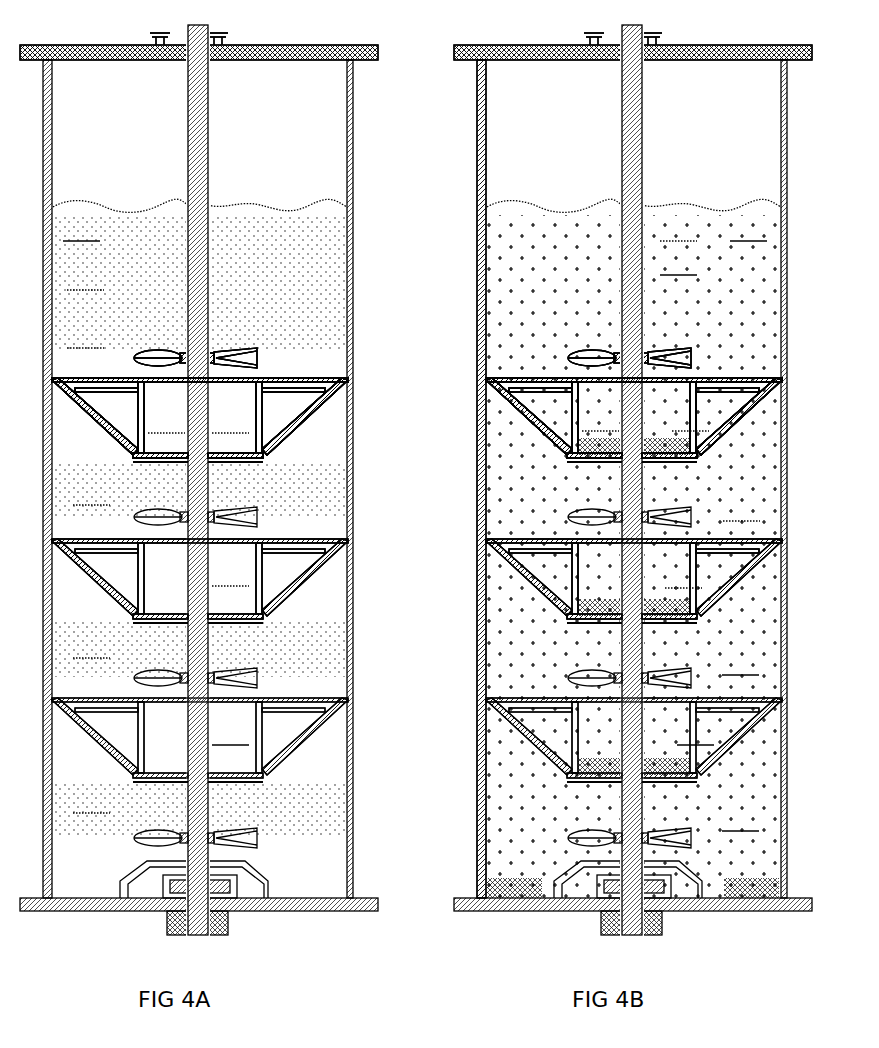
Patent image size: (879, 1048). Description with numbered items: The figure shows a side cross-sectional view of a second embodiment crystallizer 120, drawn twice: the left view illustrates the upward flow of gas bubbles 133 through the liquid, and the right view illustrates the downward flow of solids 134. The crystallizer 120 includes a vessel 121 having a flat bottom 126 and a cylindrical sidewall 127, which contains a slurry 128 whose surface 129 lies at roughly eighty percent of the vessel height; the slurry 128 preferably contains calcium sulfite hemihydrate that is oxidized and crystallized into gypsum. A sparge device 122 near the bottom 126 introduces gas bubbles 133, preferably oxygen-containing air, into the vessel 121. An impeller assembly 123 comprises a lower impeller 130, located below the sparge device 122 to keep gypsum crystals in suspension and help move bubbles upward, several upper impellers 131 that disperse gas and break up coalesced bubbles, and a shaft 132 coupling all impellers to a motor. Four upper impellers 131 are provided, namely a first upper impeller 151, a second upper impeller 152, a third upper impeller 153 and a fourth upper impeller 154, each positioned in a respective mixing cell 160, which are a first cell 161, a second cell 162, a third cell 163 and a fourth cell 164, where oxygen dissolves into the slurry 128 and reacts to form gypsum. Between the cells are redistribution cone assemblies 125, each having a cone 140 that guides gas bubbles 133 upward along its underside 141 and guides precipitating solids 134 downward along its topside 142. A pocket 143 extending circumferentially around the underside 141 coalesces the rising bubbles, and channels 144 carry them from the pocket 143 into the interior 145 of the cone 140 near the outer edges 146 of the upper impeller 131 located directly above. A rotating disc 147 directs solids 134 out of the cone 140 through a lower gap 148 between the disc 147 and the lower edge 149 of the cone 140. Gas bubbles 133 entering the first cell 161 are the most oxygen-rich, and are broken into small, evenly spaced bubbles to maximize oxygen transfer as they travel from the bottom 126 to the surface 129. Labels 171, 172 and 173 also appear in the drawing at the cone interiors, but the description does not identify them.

In FIG. 4A, the crystallizer 120 is at (104, 14).
In FIG. 4B, the crystallizer 120 is at (537, 14).
In FIG. 4A, the vessel 121 is at (355, 104).
In FIG. 4B, the vessel 121 is at (466, 104).
In FIG. 4A, the sparge device 122 is at (255, 860).
In FIG. 4B, the sparge device 122 is at (565, 862).
In FIG. 4A, the impeller assembly 123 is at (228, 320).
In FIG. 4B, the impeller assembly 123 is at (533, 333).
In FIG. 4A, the redistribution cone assembly 125 is at (309, 358).
In FIG. 4B, the redistribution cone assembly 125 is at (517, 358).
In FIG. 4A, the bottom 126 is at (318, 897).
In FIG. 4B, the bottom 126 is at (587, 880).
In FIG. 4A, the cylindrical sidewall 127 is at (353, 153).
In FIG. 4B, the cylindrical sidewall 127 is at (477, 149).
In FIG. 4A, the slurry 128 is at (81, 230).
In FIG. 4B, the slurry 128 is at (748, 230).
In FIG. 4A, the surface 129 is at (298, 206).
In FIG. 4B, the surface 129 is at (731, 206).
In FIG. 4A, the lower impeller 130 is at (283, 912).
In FIG. 4B, the lower impeller 130 is at (533, 912).
In FIG. 4A, the upper impeller 131 is at (141, 338).
In FIG. 4B, the upper impeller 131 is at (583, 338).
In FIG. 4A, the shaft 132 is at (210, 28).
In FIG. 4B, the shaft 132 is at (644, 28).
In FIG. 4A, the gas bubbles 133 is at (85, 279).
In FIG. 4B, the solids 134 is at (678, 230).
In FIG. 4A, the cone 140 is at (316, 428).
In FIG. 4B, the cone 140 is at (519, 418).
In FIG. 4A, the underside 141 is at (350, 593).
In FIG. 4B, the underside 141 is at (527, 580).
In FIG. 4B, the topside 142 is at (745, 390).
In FIG. 4A, the pocket 143 is at (345, 384).
In FIG. 4B, the pocket 143 is at (488, 390).
In FIG. 4A, the channels 144 is at (283, 392).
In FIG. 4B, the channels 144 is at (720, 392).
In FIG. 4A, the interior 145 is at (200, 420).
In FIG. 4B, the interior 145 is at (634, 420).
In FIG. 4A, the outer edges 146 is at (258, 347).
In FIG. 4B, the outer edges 146 is at (692, 350).
In FIG. 4A, the rotating disc 147 is at (258, 520).
In FIG. 4B, the rotating disc 147 is at (552, 517).
In FIG. 4A, the lower gap 148 is at (265, 453).
In FIG. 4B, the lower gap 148 is at (583, 462).
In FIG. 4A, the lower edge 149 is at (265, 449).
In FIG. 4B, the lower edge 149 is at (567, 453).
In FIG. 4A, the first upper impeller 151 is at (257, 833).
In FIG. 4B, the first upper impeller 151 is at (567, 837).
In FIG. 4A, the second upper impeller 152 is at (257, 672).
In FIG. 4B, the second upper impeller 152 is at (567, 678).
In FIG. 4A, the third upper impeller 153 is at (300, 550).
In FIG. 4B, the third upper impeller 153 is at (487, 555).
In FIG. 4A, the fourth upper impeller 154 is at (167, 349).
In FIG. 4B, the fourth upper impeller 154 is at (604, 349).
In FIG. 4A, the mixing cell 160 is at (305, 773).
In FIG. 4B, the mixing cell 160 is at (522, 771).
In FIG. 4A, the first cell 161 is at (91, 802).
In FIG. 4B, the first cell 161 is at (740, 820).
In FIG. 4A, the second cell 162 is at (91, 647).
In FIG. 4B, the second cell 162 is at (740, 664).
In FIG. 4A, the third cell 163 is at (91, 494).
In FIG. 4B, the third cell 163 is at (741, 510).
In FIG. 4A, the fourth cell 164 is at (85, 337).
In FIG. 4B, the fourth cell 164 is at (678, 264).
In FIG. 4A, the third tray chamber 171 is at (200, 740).
In FIG. 4B, the third tray chamber 171 is at (634, 740).
In FIG. 4A, the second tray chamber 172 is at (200, 581).
In FIG. 4B, the second tray chamber 172 is at (634, 581).
In FIG. 4A, the first tray chamber 173 is at (200, 420).
In FIG. 4B, the first tray chamber 173 is at (634, 420).